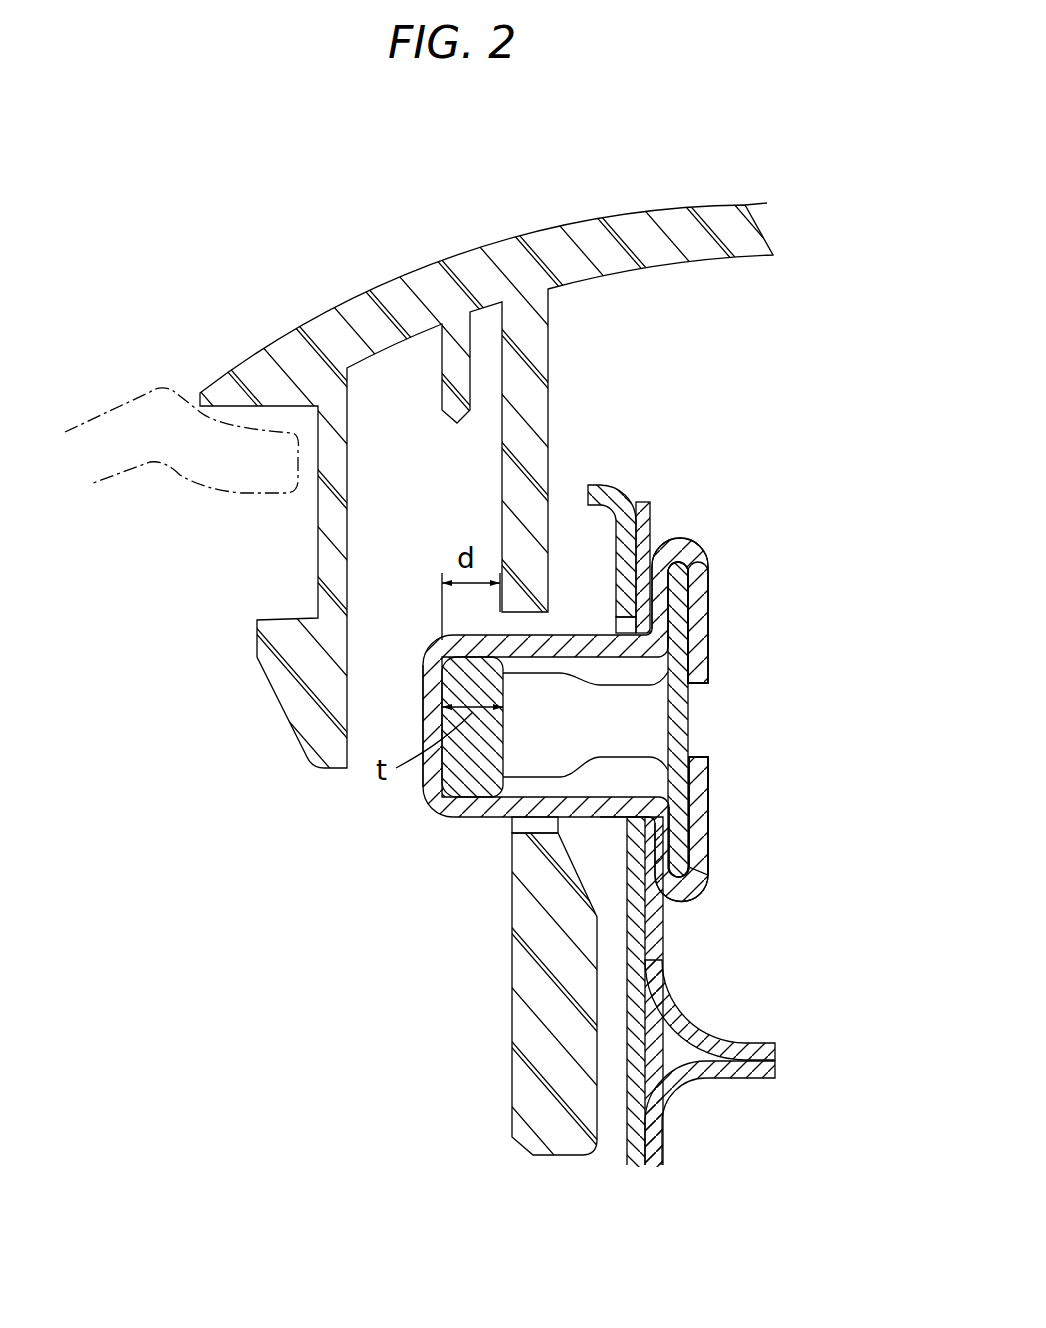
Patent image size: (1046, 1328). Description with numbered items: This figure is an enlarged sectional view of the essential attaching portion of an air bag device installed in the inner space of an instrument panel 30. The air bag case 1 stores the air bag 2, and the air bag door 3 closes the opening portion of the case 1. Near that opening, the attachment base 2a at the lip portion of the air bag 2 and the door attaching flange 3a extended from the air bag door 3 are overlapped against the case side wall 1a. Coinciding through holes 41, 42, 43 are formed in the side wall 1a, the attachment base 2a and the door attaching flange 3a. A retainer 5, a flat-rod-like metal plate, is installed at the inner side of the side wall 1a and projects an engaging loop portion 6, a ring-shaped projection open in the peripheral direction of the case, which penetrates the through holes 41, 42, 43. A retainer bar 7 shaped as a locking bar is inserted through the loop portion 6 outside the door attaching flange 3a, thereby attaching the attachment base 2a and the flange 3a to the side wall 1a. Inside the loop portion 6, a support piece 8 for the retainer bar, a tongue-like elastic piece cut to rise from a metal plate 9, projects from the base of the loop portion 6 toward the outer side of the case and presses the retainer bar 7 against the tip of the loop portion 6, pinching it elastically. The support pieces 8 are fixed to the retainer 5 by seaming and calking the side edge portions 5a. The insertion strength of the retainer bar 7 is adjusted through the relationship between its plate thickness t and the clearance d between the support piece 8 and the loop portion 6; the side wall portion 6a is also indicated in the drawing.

The air bag case 1 is at (652, 1047).
The case side wall 1a is at (624, 568).
The air bag 2 is at (733, 1043).
The attachment base 2a is at (650, 517).
The air bag door 3 is at (668, 220).
The door attaching flange 3a is at (537, 1013).
The retainer 5 is at (712, 557).
The side edge portions 5a is at (700, 612).
The engaging loop portion 6 is at (485, 813).
The side wall of clip body 6a is at (432, 700).
The retainer bar 7 is at (472, 772).
The support piece for retainer bar 8 is at (559, 732).
The plate 9 is at (677, 722).
The instrument panel 30 is at (132, 415).
The through hole 41 is at (620, 818).
The through hole 42 is at (692, 812).
The through hole 43 is at (508, 835).